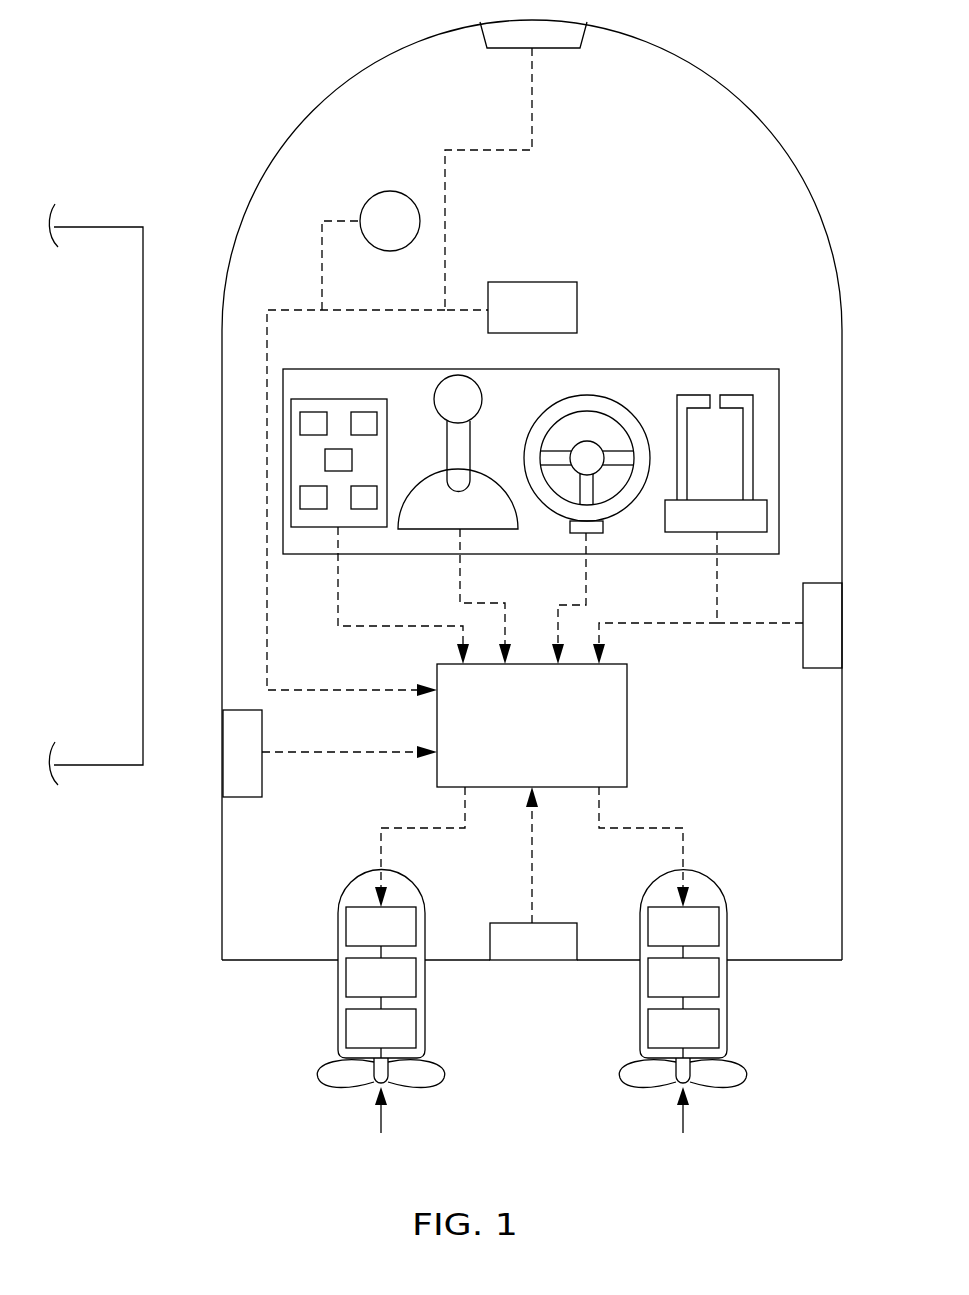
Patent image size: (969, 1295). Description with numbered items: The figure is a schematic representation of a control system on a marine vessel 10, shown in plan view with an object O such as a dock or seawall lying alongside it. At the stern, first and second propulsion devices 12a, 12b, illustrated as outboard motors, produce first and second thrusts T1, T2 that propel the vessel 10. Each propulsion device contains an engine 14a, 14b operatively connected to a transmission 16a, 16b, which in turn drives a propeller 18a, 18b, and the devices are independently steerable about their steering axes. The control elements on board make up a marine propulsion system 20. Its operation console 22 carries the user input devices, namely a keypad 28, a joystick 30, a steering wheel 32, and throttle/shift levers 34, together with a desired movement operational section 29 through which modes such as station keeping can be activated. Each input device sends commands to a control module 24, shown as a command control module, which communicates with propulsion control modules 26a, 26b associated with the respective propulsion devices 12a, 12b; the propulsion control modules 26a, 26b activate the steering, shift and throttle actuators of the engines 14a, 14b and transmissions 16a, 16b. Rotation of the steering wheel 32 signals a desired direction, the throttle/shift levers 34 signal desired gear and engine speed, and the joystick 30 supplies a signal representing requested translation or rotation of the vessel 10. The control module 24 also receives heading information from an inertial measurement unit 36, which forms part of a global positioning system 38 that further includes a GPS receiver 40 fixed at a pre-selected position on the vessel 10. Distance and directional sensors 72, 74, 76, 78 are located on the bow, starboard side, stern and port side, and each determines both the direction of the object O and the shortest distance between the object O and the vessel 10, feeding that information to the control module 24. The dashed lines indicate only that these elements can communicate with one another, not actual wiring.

The marine vessel 10 is at (790, 163).
The first propulsion device 12a is at (412, 898).
The second propulsion device 12b is at (710, 882).
The engine 14a is at (343, 993).
The engine 14b is at (724, 993).
The transmission 16a is at (343, 1035).
The transmission 16b is at (724, 1035).
The propeller 18a is at (320, 1079).
The propeller 18b is at (745, 1070).
The marine propulsion system 20 is at (686, 775).
The operation console 22 is at (643, 369).
The control module 24 is at (627, 713).
The propulsion control module 26a is at (343, 930).
The propulsion control module 26b is at (724, 930).
The keypad 28 is at (305, 399).
The desired movement operational section 29 is at (414, 422).
The joystick 30 is at (470, 437).
The steering wheel 32 is at (640, 437).
The throttle/shift levers 34 is at (692, 395).
The inertial measurement unit 36 is at (577, 305).
The global positioning system 38 is at (465, 265).
The GPS receiver 40 is at (393, 191).
The sensor 72 is at (565, 48).
The sensor 74 is at (818, 583).
The sensor 76 is at (533, 950).
The sensor 78 is at (262, 722).
The first thrust T1 is at (378, 1125).
The second thrust T2 is at (686, 1130).
The object O is at (101, 501).